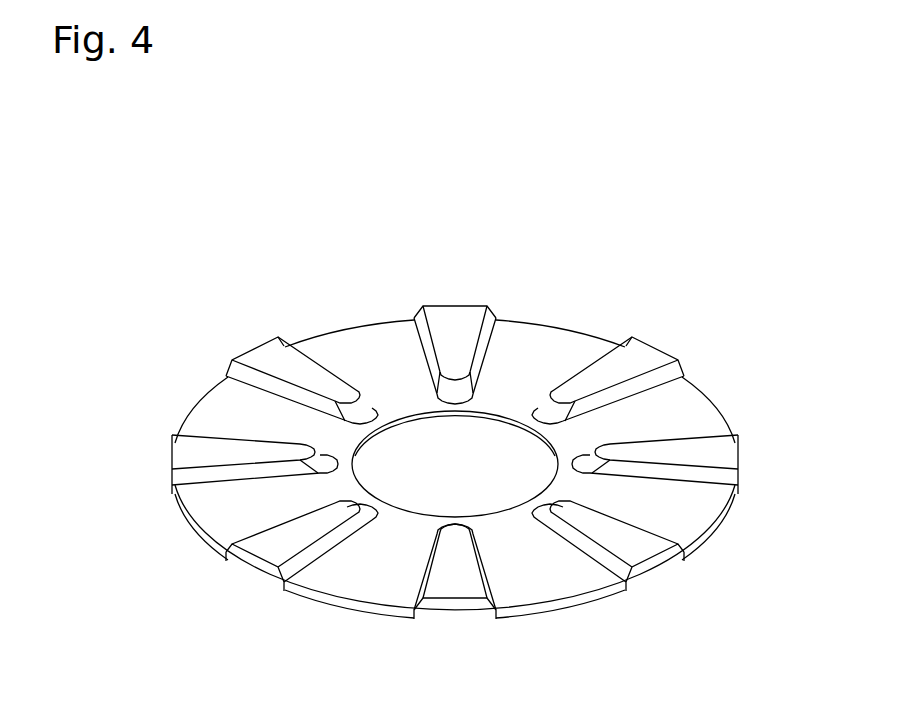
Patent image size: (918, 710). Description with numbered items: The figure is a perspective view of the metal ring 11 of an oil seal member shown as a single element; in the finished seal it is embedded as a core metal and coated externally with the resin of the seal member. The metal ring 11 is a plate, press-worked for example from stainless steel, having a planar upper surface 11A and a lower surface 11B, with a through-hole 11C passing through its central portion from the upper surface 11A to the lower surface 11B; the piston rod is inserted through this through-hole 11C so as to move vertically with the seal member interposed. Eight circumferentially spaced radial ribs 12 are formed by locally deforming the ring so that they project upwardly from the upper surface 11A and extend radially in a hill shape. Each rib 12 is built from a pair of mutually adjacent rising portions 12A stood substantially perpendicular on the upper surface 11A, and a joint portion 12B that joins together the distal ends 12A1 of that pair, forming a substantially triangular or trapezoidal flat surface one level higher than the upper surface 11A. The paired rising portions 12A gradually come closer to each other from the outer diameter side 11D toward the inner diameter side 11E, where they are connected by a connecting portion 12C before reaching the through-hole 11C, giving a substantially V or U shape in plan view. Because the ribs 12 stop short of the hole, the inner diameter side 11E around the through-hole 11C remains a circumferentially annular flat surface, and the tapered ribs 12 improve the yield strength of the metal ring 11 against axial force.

The metal ring 11 is at (456, 230).
The upper surface 11A is at (368, 370).
The lower surface 11B is at (350, 612).
The through-hole 11C is at (513, 413).
The outer diameter side 11D is at (205, 407).
The inner diameter side 11E is at (372, 434).
The rib 12 is at (444, 454).
The rising portion 12A is at (428, 352).
The distal end 12A1 is at (428, 307).
The joint portion 12B is at (445, 306).
The connecting portion 12C is at (455, 392).